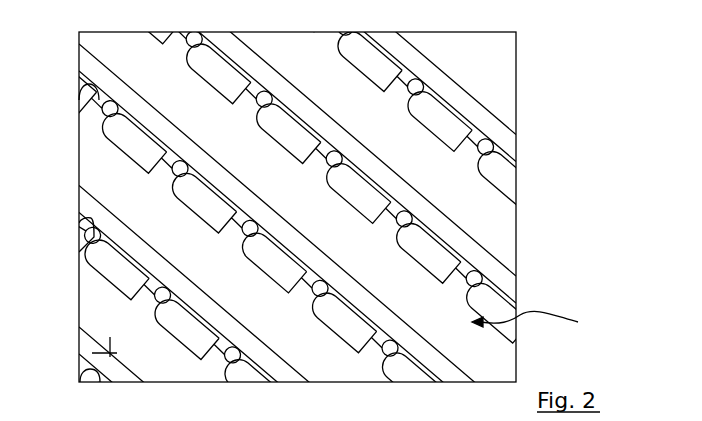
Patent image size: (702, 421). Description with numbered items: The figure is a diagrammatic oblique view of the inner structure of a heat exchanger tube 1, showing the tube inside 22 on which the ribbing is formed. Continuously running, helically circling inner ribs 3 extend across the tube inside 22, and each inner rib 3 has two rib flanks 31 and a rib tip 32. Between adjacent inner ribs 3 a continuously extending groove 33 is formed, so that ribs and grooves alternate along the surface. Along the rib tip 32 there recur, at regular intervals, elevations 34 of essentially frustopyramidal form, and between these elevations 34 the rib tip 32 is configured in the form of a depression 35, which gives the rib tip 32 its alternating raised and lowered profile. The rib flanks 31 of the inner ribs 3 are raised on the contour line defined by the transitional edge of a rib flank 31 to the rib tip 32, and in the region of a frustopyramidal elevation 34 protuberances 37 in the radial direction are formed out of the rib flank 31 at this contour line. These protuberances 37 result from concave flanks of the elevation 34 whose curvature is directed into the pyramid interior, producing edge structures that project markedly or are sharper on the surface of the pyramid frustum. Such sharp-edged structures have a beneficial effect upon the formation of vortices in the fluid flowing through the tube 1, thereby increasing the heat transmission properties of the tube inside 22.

The heat exchanger tube 1 is at (25, 46).
The tube inside 22 is at (103, 23).
The protuberance 37 is at (79, 92).
The frustopyramidal elevation 34 is at (519, 186).
The depression 35 is at (508, 318).
The rib tip 32 is at (336, 210).
The rib flank 31 is at (515, 215).
The groove 33 is at (508, 262).
The inner rib 3 is at (536, 320).